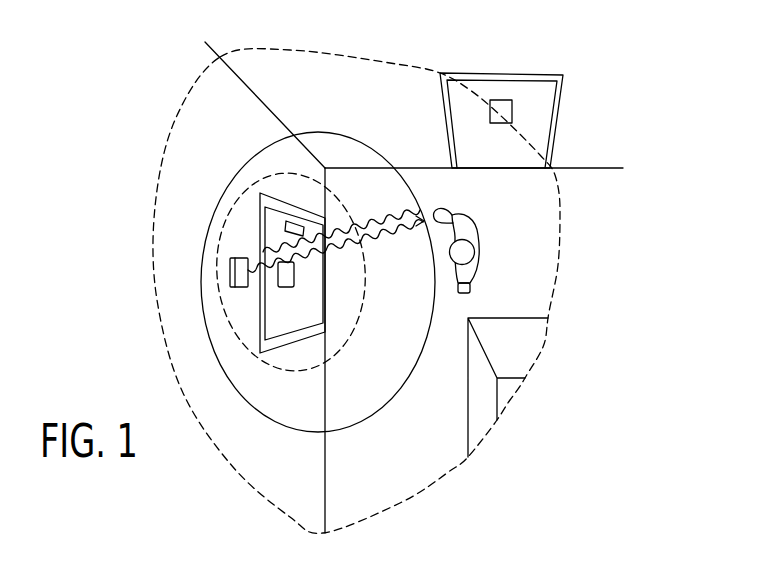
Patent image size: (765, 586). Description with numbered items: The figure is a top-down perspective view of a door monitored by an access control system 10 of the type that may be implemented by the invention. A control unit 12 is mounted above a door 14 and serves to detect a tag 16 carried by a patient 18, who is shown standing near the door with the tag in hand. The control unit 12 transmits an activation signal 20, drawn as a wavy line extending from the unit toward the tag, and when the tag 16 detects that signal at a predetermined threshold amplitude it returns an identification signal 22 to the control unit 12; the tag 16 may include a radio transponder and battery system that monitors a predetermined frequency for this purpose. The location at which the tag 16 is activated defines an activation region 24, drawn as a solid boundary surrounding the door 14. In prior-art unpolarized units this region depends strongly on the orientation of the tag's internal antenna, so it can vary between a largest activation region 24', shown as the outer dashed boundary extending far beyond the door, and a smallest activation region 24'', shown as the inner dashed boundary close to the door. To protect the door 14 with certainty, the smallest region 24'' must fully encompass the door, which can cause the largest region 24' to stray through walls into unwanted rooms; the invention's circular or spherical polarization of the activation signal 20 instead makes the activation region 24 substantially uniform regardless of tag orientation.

The access control system 10 is at (507, 52).
The control unit 12 is at (228, 274).
The door 14 is at (295, 322).
The tag 16 is at (450, 212).
The patient 18 is at (475, 248).
The activation signal 20 is at (396, 232).
The identification signal 22 is at (370, 210).
The activation region 24 is at (318, 297).
The largest activation region 24' is at (388, 291).
The smallest activation region 24'' is at (298, 271).